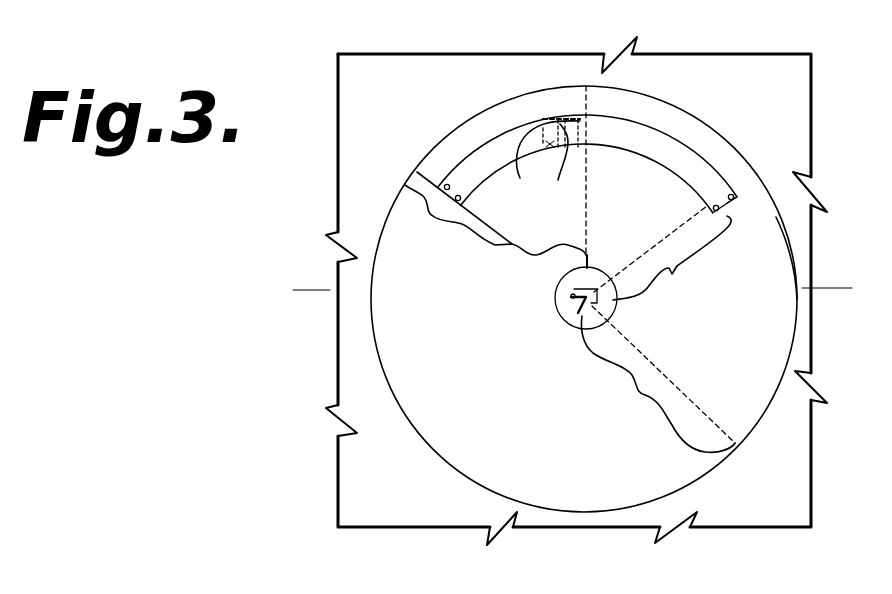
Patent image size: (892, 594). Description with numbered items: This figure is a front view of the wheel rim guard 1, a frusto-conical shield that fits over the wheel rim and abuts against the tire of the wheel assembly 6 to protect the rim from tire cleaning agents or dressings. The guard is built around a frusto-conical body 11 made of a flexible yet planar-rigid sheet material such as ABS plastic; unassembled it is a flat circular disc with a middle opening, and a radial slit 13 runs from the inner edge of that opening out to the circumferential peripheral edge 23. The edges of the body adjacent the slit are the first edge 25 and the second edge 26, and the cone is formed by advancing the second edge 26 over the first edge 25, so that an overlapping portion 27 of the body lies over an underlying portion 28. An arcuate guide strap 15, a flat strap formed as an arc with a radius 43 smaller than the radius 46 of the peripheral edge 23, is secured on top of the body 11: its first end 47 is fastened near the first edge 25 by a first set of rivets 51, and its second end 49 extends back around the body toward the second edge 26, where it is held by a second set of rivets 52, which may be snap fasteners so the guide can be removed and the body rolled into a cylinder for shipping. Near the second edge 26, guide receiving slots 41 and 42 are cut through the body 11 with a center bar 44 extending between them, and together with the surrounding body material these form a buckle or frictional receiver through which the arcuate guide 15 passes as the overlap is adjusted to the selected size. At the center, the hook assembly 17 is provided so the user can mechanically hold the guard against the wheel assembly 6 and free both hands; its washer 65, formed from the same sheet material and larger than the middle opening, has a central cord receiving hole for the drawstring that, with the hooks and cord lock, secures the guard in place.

The wheel rim guard 1 is at (538, 70).
The wheel assembly 6 is at (306, 283).
The frusto-conical body 11 is at (594, 492).
The radial slit 13 is at (587, 100).
The arcuate guide strap 15 is at (695, 177).
The hook assembly 17 is at (560, 306).
The peripheral edge 23 is at (797, 260).
The first edge 25 is at (425, 180).
The second edge 26 is at (587, 255).
The overlapping portion 27 is at (630, 157).
The underlying portion 28 is at (568, 102).
The guide receiving slot 41 is at (534, 161).
The guide receiving slot 42 is at (555, 138).
The radius of arcuate guide 43 is at (662, 253).
The center bar 44 is at (569, 164).
The radius of peripheral edge 46 is at (658, 379).
The first end of arcuate guide 47 is at (446, 192).
The second end of arcuate guide 49 is at (729, 205).
The first set of rivets 51 is at (449, 184).
The second set of rivets 52 is at (733, 197).
The washer 65 is at (572, 318).